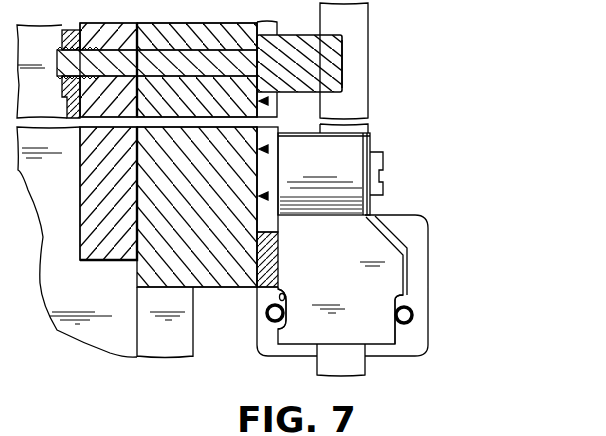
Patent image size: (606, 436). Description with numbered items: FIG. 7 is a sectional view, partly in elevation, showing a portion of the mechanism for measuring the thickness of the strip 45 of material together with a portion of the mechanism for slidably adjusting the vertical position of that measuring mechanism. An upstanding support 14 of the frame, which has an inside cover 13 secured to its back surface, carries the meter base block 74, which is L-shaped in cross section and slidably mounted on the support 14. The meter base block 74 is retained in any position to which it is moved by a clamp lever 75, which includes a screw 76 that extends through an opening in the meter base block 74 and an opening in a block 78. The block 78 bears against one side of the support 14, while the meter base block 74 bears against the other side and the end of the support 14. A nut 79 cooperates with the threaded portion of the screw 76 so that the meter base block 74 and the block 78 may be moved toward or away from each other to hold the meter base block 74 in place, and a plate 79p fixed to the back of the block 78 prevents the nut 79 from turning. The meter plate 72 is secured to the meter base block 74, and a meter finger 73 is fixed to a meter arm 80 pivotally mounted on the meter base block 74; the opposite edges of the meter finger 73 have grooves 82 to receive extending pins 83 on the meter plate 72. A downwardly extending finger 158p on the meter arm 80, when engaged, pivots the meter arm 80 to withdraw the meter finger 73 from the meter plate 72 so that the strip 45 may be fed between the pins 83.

The inside cover 13 is at (47, 282).
The upstanding support 14 is at (167, 353).
The strip of material 45 is at (370, 92).
The meter plate 72 is at (428, 259).
The meter finger 73 is at (380, 356).
The meter base block 74 is at (235, 288).
The clamp lever 75 is at (350, 60).
The screw 76 is at (300, 34).
The block 78 is at (122, 30).
The nut 79 is at (61, 40).
The plate 79p is at (67, 113).
The meter arm 80 is at (270, 160).
The grooves 82 is at (283, 293).
The extending pins 83 is at (273, 319).
The downwardly extending finger 158p is at (272, 258).